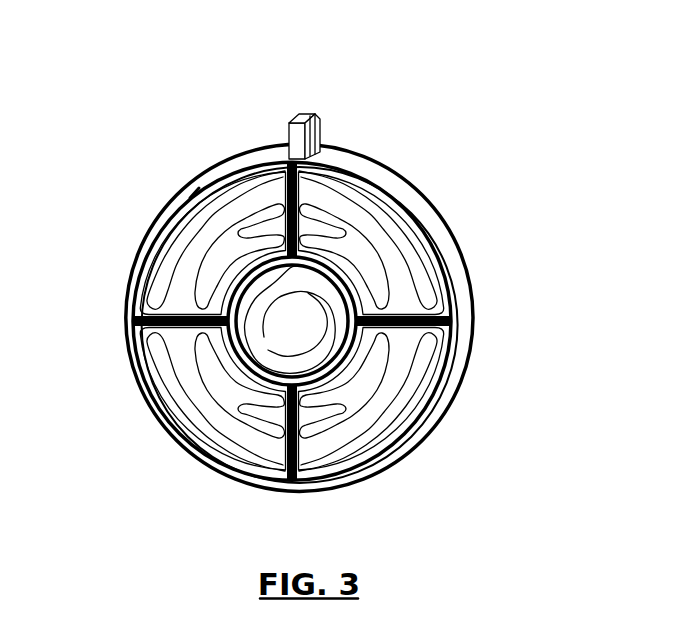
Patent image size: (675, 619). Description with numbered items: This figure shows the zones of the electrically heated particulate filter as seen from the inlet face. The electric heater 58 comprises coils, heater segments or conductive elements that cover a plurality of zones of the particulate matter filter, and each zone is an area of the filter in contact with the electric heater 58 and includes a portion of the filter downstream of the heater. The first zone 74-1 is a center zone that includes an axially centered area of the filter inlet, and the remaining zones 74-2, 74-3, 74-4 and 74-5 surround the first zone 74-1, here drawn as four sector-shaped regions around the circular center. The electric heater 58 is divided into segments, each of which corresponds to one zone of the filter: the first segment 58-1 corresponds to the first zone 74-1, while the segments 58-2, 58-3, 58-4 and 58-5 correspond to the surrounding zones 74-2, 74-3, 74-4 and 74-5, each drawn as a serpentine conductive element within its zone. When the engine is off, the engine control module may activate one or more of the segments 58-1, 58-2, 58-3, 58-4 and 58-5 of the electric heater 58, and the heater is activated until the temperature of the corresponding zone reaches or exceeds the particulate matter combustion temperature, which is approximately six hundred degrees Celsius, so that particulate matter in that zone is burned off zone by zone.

The electric heater 58 is at (413, 186).
The first segment 58-1 is at (397, 324).
The second segment 58-2 is at (422, 243).
The third segment 58-3 is at (376, 422).
The fourth segment 58-4 is at (178, 400).
The fifth segment 58-5 is at (174, 243).
The first zone 74-1 is at (289, 319).
The second zone 74-2 is at (368, 240).
The third zone 74-3 is at (368, 402).
The fourth zone 74-4 is at (216, 402).
The fifth zone 74-5 is at (216, 240).